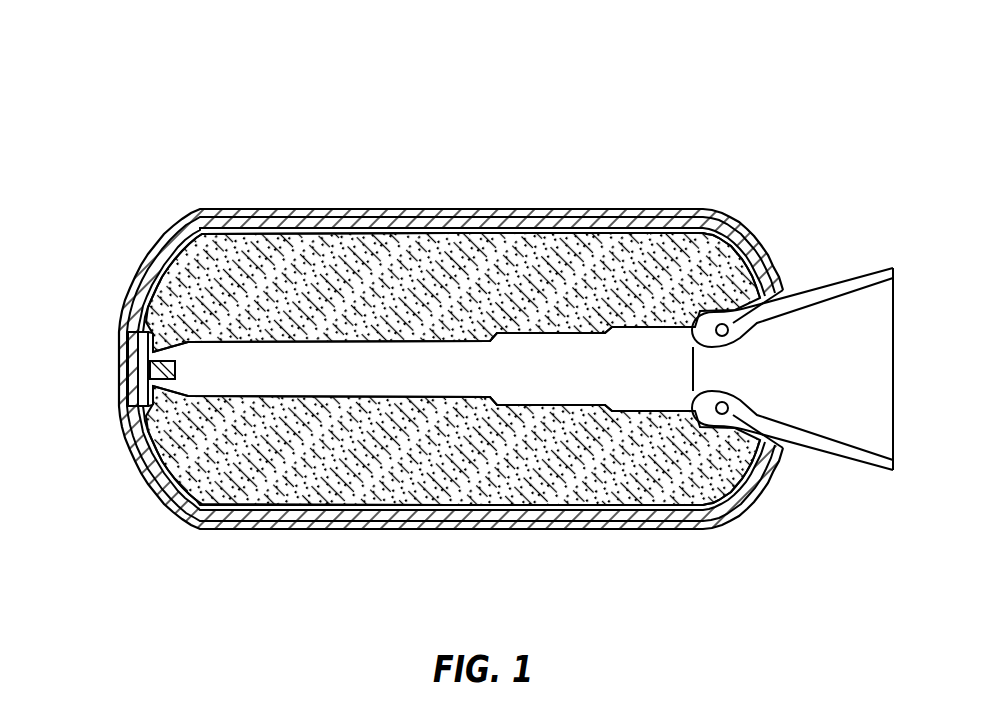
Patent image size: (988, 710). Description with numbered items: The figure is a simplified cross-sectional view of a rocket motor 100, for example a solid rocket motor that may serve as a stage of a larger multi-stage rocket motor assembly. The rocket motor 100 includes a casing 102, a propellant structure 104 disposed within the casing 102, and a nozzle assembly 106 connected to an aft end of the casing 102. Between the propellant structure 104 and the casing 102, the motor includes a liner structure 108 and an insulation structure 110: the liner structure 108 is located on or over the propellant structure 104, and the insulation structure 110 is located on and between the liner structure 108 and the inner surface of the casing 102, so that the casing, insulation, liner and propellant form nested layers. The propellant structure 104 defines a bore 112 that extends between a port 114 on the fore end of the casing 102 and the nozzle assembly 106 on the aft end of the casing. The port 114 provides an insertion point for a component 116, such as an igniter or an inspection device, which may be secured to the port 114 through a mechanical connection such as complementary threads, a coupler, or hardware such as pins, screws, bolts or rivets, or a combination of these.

The rocket motor 100 is at (718, 143).
The casing 102 is at (205, 209).
The propellant structure 104 is at (507, 490).
The nozzle assembly 106 is at (838, 280).
The liner structure 108 is at (378, 236).
The insulation structure 110 is at (311, 222).
The bore 112 is at (266, 375).
The port 114 is at (127, 352).
The component 116 is at (150, 372).